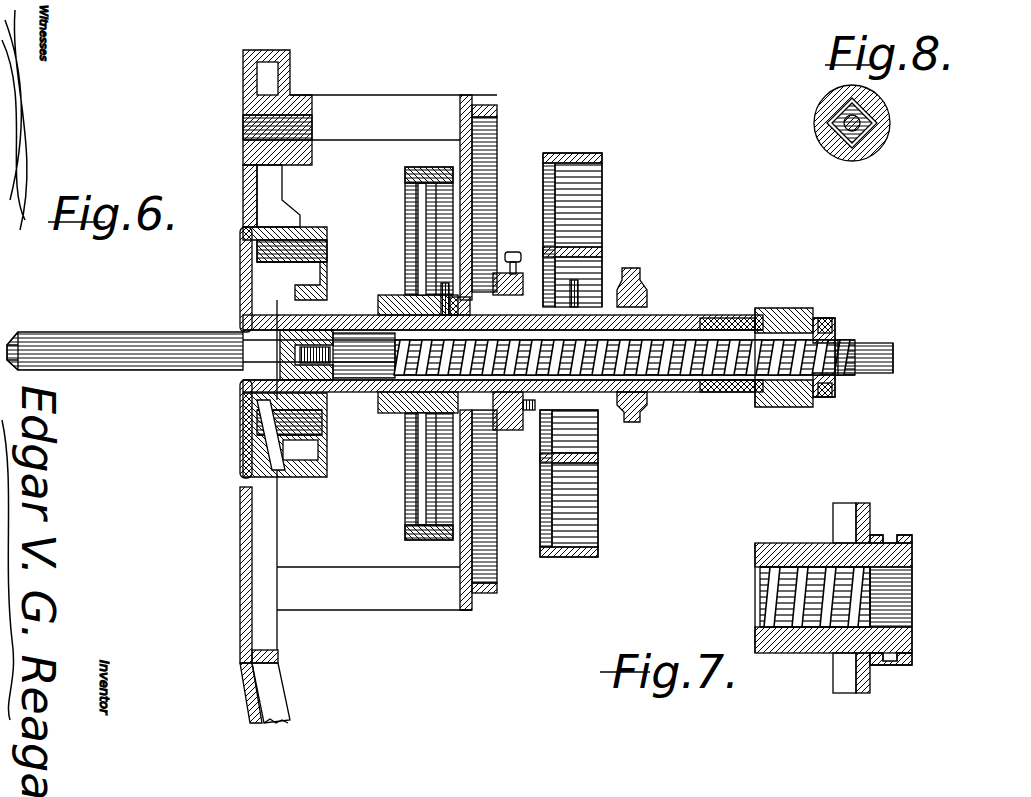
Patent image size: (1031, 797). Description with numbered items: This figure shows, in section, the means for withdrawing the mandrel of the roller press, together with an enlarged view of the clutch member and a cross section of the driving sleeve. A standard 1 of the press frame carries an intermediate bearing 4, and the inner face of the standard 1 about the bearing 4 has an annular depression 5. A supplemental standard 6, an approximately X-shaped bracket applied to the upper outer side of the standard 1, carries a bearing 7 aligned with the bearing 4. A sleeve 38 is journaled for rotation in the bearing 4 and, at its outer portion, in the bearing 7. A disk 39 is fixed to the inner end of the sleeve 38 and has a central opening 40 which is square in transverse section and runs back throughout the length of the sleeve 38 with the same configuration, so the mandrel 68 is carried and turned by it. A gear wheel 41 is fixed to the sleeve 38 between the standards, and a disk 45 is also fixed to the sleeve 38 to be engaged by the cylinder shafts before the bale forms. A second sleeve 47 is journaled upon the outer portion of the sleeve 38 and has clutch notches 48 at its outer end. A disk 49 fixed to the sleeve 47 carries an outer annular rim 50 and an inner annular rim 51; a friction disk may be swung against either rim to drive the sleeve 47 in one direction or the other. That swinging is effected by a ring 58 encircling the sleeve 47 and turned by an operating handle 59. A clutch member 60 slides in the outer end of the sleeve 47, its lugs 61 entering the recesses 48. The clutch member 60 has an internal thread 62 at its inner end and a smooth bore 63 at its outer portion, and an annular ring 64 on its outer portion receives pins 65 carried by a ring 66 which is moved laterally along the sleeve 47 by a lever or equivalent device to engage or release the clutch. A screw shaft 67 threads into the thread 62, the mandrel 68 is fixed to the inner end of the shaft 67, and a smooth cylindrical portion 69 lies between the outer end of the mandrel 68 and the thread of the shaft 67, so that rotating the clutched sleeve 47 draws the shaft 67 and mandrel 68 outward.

In FIG. 6, the standard 1 is at (255, 548).
In FIG. 6, the bearing 4 is at (325, 305).
In FIG. 6, the annular depression 5 is at (245, 483).
In FIG. 6, the supplemental standard 6 is at (480, 505).
In FIG. 6, the bearing 7 is at (480, 395).
In FIG. 6, the sleeve 38 is at (250, 400).
In FIG. 8, the sleeve 38 is at (868, 152).
In FIG. 6, the disk 39 is at (245, 396).
In FIG. 6, the opening 40 is at (247, 332).
In FIG. 8, the opening 40 is at (872, 128).
In FIG. 6, the gear wheel 41 is at (414, 177).
In FIG. 6, the disk 45 is at (395, 415).
In FIG. 6, the sleeve 47 is at (680, 315).
In FIG. 6, the clutch notch 48 is at (815, 405).
In FIG. 6, the disk 49 is at (543, 175).
In FIG. 6, the outer annular rim 50 is at (620, 145).
In FIG. 6, the inner annular rim 51 is at (605, 250).
In FIG. 6, the ring 58 is at (636, 420).
In FIG. 6, the operating handle 59 is at (640, 268).
In FIG. 6, the clutch member 60 is at (765, 395).
In FIG. 7, the clutch member 60 is at (800, 653).
In FIG. 7, the lug 61 is at (835, 522).
In FIG. 7, the internal thread 62 is at (778, 600).
In FIG. 7, the smooth bore 63 is at (912, 580).
In FIG. 7, the annular ring 64 is at (890, 540).
In FIG. 6, the pin 65 is at (838, 330).
In FIG. 6, the ring 66 is at (828, 318).
In FIG. 6, the screw shaft 67 is at (735, 325).
In FIG. 6, the mandrel 68 is at (148, 368).
In FIG. 6, the cylindrical portion 69 is at (355, 362).